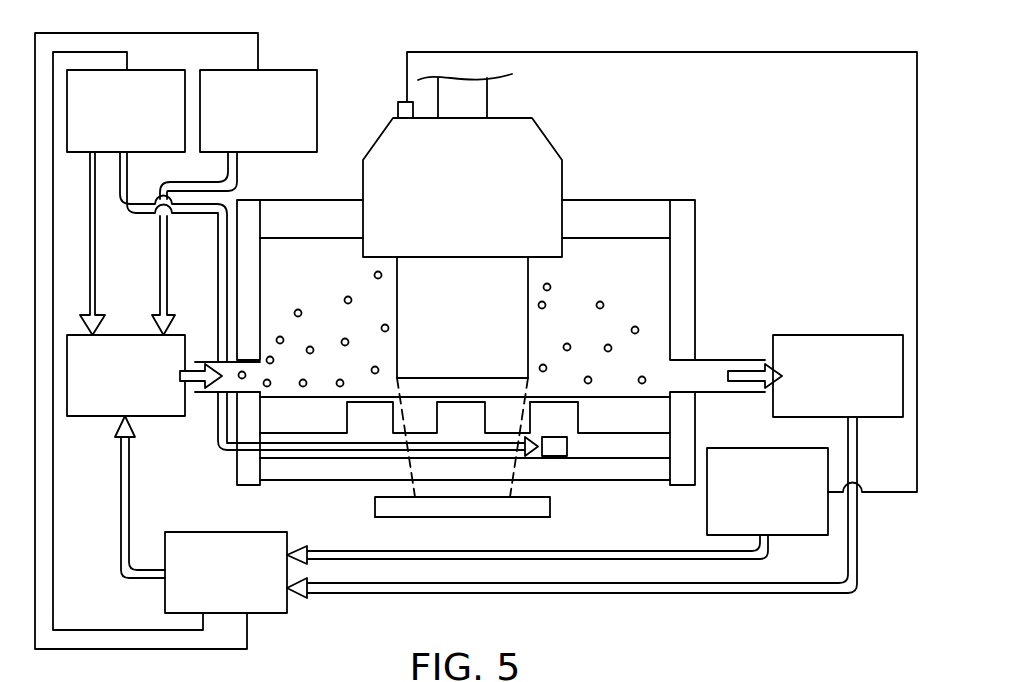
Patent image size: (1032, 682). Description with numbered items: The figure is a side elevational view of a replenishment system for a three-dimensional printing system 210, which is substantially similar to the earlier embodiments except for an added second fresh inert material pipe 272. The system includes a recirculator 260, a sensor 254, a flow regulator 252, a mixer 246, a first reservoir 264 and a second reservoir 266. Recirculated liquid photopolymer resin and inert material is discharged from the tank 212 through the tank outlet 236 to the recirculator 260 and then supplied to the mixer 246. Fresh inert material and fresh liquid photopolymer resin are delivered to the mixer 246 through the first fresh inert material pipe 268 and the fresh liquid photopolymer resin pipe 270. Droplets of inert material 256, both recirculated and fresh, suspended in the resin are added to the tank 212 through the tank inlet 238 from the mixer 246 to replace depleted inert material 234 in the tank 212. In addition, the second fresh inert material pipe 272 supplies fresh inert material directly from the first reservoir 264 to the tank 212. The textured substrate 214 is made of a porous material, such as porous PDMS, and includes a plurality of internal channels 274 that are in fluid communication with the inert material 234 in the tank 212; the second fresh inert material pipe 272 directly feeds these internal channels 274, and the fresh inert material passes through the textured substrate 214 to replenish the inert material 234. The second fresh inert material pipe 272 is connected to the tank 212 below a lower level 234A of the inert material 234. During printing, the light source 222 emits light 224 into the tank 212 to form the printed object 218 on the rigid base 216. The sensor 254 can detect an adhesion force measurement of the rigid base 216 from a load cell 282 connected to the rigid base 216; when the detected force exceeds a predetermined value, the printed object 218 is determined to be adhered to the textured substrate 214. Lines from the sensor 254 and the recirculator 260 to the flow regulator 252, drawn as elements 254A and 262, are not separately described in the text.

The 3D printing system 210 is at (767, 33).
The tank 212 is at (695, 260).
The textured substrate 214 is at (623, 435).
The rigid base 216 is at (545, 130).
The printed object 218 is at (528, 277).
The light source 222 is at (403, 517).
The light 224 is at (415, 489).
The inert material 234 is at (603, 397).
The lower level of the inert material 234A is at (643, 435).
The tank outlet 236 is at (745, 360).
The tank inlet 238 is at (211, 394).
The mixer 246 is at (93, 418).
The flow regulator 252 is at (220, 532).
The sensor 254 is at (733, 448).
The detector signal line 254A is at (735, 560).
The droplets of inert material 256 is at (297, 310).
The recirculator 260 is at (858, 335).
The return line 262 is at (672, 594).
The first reservoir 264 is at (145, 152).
The second reservoir 266 is at (273, 152).
The first fresh inert material pipe 268 is at (95, 247).
The fresh liquid photopolymer resin pipe 270 is at (170, 273).
The second fresh inert material pipe 272 is at (218, 327).
The internal channels 274 is at (568, 448).
The load cell 282 is at (398, 110).